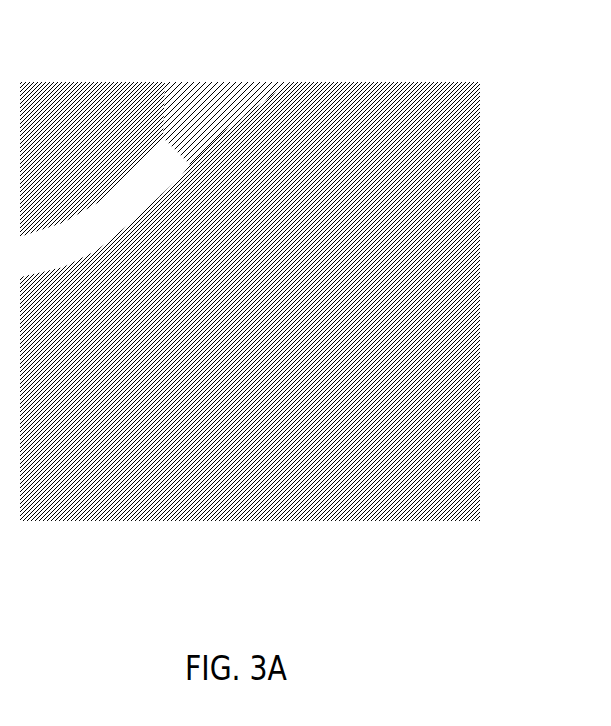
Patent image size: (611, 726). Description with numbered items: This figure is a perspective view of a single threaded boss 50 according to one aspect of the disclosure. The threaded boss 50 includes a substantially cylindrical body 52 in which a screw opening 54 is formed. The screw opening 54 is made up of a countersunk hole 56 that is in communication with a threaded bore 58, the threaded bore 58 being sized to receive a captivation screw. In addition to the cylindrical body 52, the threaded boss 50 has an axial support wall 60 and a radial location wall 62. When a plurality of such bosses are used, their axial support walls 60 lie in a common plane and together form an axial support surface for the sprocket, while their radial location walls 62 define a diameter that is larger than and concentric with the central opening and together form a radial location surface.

The threaded boss 50 is at (414, 279).
The substantially cylindrical body 52 is at (387, 345).
The screw opening 54 is at (257, 345).
The countersunk hole 56 is at (293, 367).
The threaded bore 58 is at (273, 310).
The axial support wall 60 is at (187, 190).
The radial location wall 62 is at (248, 196).